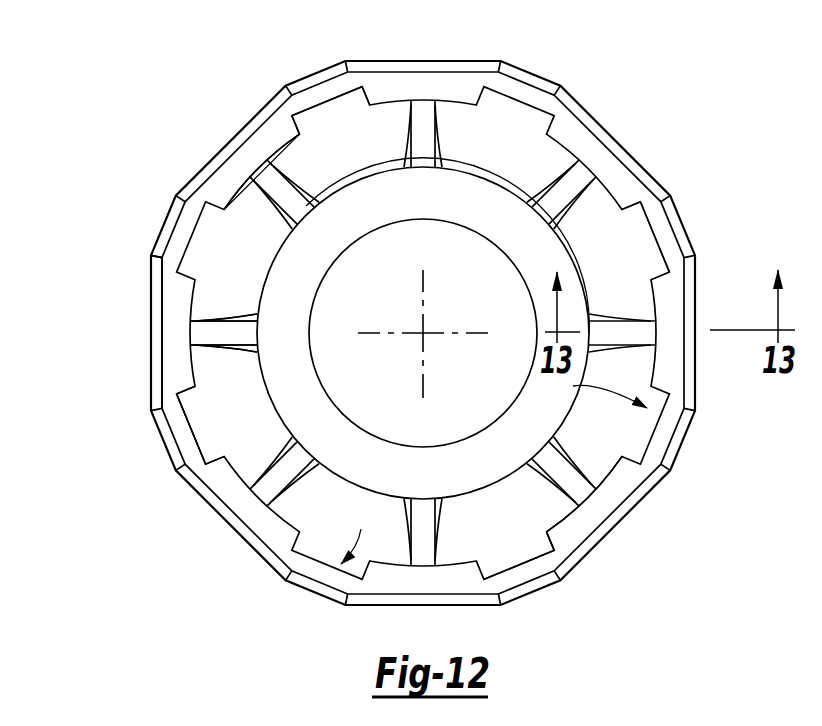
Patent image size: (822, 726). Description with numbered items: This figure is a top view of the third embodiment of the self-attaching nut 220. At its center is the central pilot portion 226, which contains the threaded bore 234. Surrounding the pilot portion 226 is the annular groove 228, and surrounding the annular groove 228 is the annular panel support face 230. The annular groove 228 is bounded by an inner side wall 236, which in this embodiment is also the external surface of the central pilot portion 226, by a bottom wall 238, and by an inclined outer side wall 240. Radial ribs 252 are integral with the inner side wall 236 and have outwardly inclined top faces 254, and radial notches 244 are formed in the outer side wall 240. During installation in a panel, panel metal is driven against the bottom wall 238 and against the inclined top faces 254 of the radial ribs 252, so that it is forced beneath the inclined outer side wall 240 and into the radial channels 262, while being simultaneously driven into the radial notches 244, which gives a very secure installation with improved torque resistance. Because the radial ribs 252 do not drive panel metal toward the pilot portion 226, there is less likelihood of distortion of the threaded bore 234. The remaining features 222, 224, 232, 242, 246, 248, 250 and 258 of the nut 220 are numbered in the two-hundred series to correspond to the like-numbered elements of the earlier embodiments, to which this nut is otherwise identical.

The self-attaching nut 220 is at (627, 120).
The housing 222 is at (146, 353).
The stator core 224 is at (610, 175).
The central pilot portion 226 is at (528, 407).
The annular groove 228 is at (330, 138).
The annular panel support face 230 is at (424, 88).
The hub ring 232 is at (406, 201).
The threaded bore 234 is at (518, 273).
The inner side wall 236 is at (505, 189).
The bottom wall 238 is at (236, 442).
The inclined outer side wall 240 is at (265, 190).
The housing corner 242 is at (152, 270).
The radial notches 244 is at (494, 472).
The chamfered pad 246 is at (660, 228).
The step 248 is at (633, 207).
The housing outer surface 250 is at (700, 438).
The radial ribs 252 is at (272, 188).
The outwardly inclined top faces 254 is at (211, 345).
The spoke edge 258 is at (252, 318).
The radial channels 262 is at (655, 331).